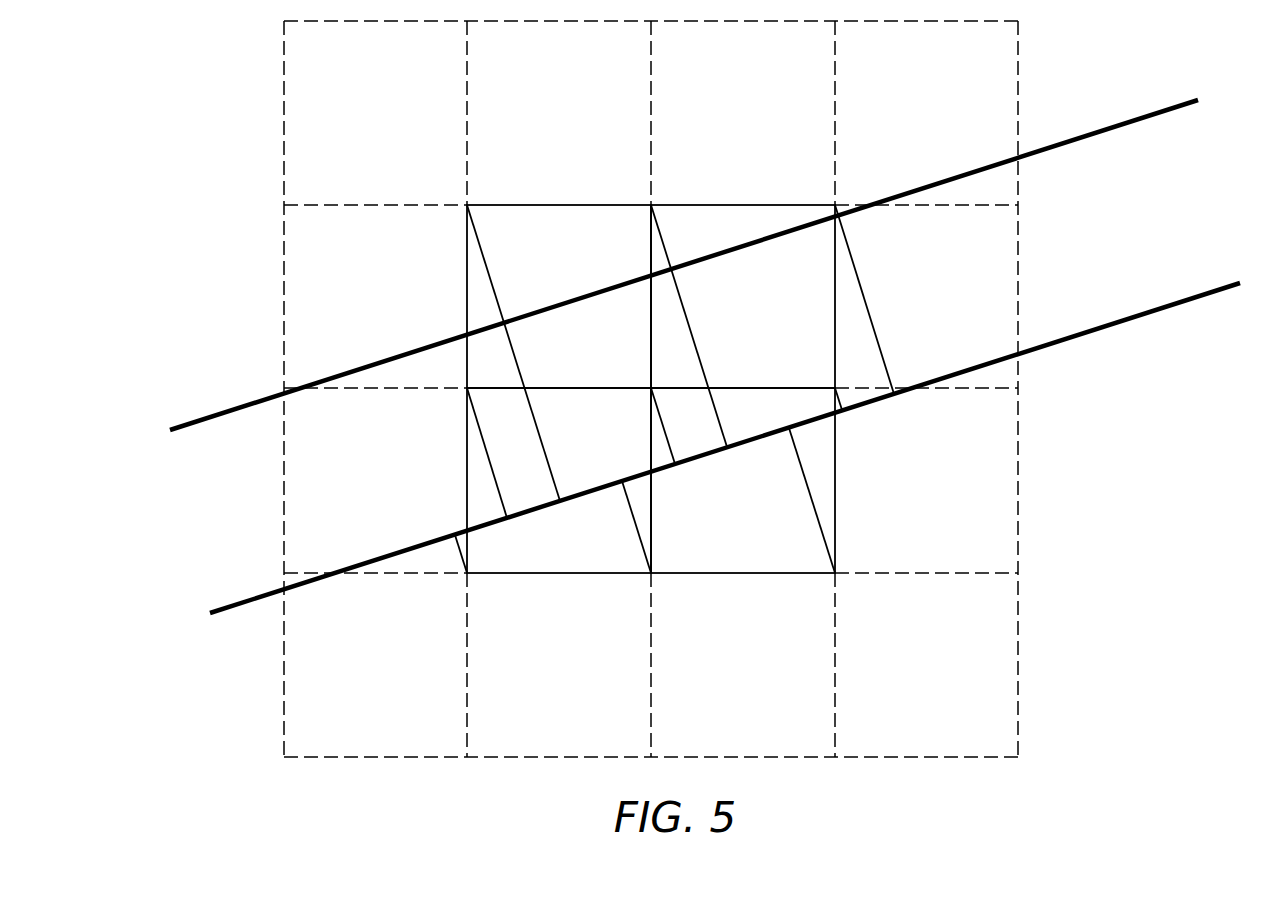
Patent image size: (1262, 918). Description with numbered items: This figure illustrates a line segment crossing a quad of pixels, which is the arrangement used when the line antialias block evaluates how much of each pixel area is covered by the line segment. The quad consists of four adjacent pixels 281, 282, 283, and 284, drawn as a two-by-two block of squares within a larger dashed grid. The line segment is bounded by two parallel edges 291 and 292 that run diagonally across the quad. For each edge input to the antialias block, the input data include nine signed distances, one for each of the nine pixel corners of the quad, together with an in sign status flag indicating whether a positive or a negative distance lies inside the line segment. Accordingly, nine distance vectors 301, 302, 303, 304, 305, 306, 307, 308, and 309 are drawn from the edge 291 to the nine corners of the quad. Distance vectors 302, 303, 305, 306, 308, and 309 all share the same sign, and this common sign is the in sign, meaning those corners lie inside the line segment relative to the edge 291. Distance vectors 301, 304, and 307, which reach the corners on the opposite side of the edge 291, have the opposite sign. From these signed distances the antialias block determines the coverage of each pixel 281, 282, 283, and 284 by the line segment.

The pixel 281 is at (600, 205).
The pixel 282 is at (686, 205).
The pixel 283 is at (587, 573).
The pixel 284 is at (693, 573).
The edge 291 is at (1132, 318).
The edge 292 is at (1097, 130).
The distance vector 301 is at (458, 545).
The distance vector 302 is at (502, 502).
The distance vector 303 is at (502, 318).
The distance vector 304 is at (622, 484).
The distance vector 305 is at (671, 452).
The distance vector 306 is at (705, 378).
The distance vector 307 is at (805, 478).
The distance vector 308 is at (840, 403).
The distance vector 309 is at (879, 345).